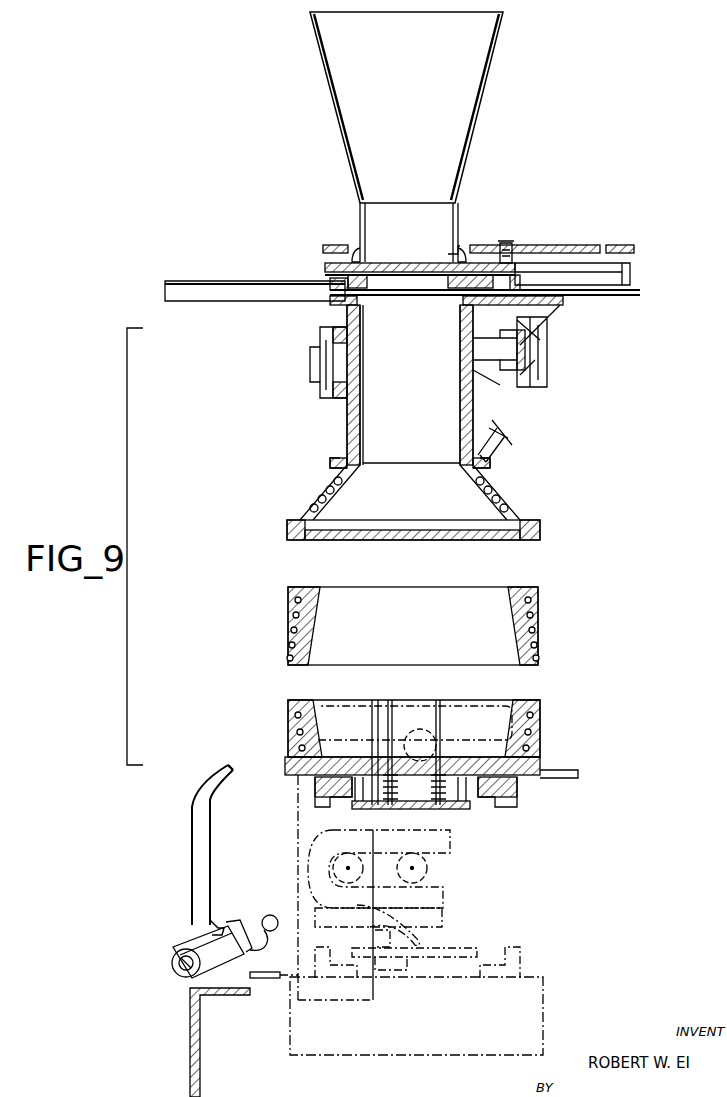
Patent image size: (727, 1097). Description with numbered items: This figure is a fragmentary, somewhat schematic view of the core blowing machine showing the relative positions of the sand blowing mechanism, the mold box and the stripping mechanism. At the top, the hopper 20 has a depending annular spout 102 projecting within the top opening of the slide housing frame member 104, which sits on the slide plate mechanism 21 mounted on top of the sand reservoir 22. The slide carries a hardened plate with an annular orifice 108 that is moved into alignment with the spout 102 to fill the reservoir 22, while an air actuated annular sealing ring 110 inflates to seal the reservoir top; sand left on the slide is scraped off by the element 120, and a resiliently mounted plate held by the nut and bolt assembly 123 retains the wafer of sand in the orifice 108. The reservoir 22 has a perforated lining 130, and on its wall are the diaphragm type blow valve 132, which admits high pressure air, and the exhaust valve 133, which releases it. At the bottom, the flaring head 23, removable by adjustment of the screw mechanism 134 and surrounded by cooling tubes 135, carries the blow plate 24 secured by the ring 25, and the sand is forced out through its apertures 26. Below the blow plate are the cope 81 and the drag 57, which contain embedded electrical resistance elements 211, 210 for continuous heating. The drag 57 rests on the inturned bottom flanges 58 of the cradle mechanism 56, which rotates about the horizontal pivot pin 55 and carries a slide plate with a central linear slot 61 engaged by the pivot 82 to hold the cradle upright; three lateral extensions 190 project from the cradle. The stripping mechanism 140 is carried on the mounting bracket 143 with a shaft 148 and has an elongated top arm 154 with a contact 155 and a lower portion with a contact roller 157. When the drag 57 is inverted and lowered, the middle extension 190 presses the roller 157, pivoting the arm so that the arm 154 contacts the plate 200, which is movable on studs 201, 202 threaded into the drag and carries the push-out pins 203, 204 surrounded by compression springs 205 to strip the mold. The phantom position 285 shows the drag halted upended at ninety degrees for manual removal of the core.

The hopper 20 is at (475, 140).
The slide plate mechanism 21 is at (622, 300).
The sand reservoir 22 is at (412, 384).
The flaring head 23 is at (516, 502).
The blow plate 24 is at (512, 542).
The ring 25 is at (542, 527).
The apertures 26 is at (362, 542).
The horizontal pivot pin 55 is at (425, 740).
The cradle mechanism 56 is at (518, 804).
The drag 57 is at (540, 720).
The inturned bottom flanges 58 is at (490, 807).
The central linear slot 61 is at (447, 850).
The cope 81 is at (420, 603).
The pivot 82 is at (427, 873).
The annular spout 102 is at (453, 230).
The top slide housing frame member 104 is at (506, 244).
The annular orifice 108 is at (576, 283).
The air actuated annular sealing ring 110 is at (343, 296).
The scraping element 120 is at (457, 262).
The nut and bolt assembly 123 is at (512, 243).
The perforated lining 130 is at (364, 410).
The blow valve 132 is at (547, 372).
The exhaust valve 133 is at (315, 385).
The screw mechanism 134 is at (506, 431).
The cooling tubes 135 is at (322, 492).
The core stripping mechanism 140 is at (178, 932).
The mounting bracket 143 is at (192, 1062).
The shaft 148 is at (180, 965).
The elongated top arm 154 is at (200, 840).
The contact 155 is at (234, 770).
The contact roller 157 is at (270, 915).
The lateral extensions 190 is at (378, 705).
The plate 200 is at (418, 809).
The stud 201 is at (355, 777).
The stud 202 is at (499, 782).
The push-out pin 203 is at (390, 760).
The push-out pin 204 is at (446, 758).
The compression springs 205 is at (392, 809).
The electrical resistance elements 210 is at (537, 700).
The electrical resistance elements 211 is at (538, 648).
The intermediate rotative position 285 is at (292, 848).